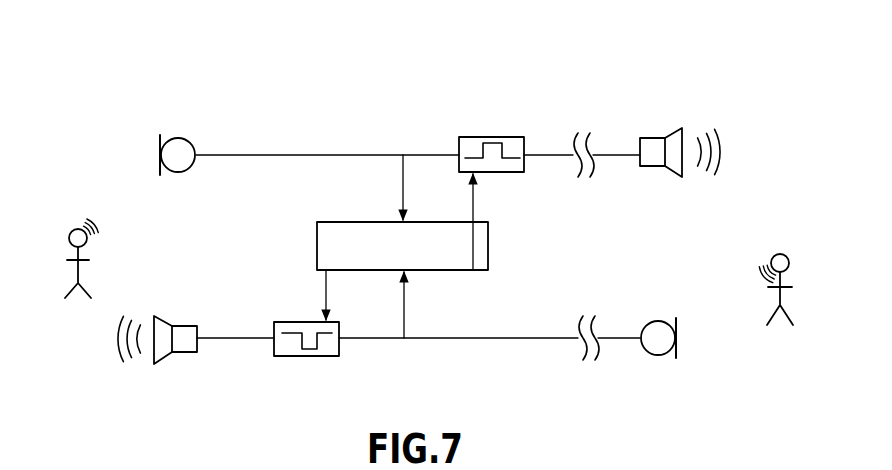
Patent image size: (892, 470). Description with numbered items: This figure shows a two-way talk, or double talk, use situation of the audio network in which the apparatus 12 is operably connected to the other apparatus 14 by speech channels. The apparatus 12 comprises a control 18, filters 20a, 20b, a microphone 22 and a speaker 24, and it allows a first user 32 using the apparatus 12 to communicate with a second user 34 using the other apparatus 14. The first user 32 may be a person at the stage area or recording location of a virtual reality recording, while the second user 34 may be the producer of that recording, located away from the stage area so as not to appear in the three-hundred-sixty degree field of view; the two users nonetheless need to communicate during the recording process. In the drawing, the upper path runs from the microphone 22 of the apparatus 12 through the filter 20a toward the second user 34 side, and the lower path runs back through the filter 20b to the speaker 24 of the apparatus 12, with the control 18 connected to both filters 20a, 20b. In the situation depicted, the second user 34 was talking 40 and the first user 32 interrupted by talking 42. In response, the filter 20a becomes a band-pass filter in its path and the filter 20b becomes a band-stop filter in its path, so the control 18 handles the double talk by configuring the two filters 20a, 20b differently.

The apparatus 12 is at (299, 133).
The other apparatus 14 is at (665, 110).
The control 18 is at (489, 244).
The filter 20a is at (492, 137).
The filter 20b is at (306, 357).
The microphone 22 is at (182, 137).
The speaker 24 is at (181, 353).
The first user 32 is at (69, 232).
The second user 34 is at (783, 253).
The talking of second user 40 is at (763, 285).
The talking of first user 42 is at (99, 222).